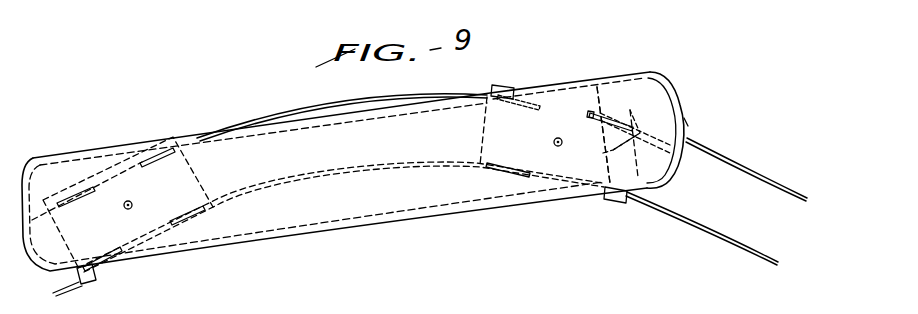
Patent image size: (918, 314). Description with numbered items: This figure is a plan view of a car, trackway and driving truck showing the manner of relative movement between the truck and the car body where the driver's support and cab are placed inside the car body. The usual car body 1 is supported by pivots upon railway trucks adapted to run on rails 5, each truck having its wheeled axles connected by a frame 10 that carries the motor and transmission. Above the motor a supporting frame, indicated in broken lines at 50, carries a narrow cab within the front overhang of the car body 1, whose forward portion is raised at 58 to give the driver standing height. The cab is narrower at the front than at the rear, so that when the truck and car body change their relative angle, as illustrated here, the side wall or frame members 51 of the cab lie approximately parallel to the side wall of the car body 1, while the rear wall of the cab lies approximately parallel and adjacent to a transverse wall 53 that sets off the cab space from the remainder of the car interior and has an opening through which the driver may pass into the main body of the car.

The car body 1 is at (254, 240).
The rails 5 is at (775, 186).
The frame 10 is at (500, 88).
The frame part 50 is at (605, 154).
The side wall or frame members 51 is at (688, 122).
The transverse wall 53 is at (598, 92).
The raised forward portion 58 is at (650, 95).